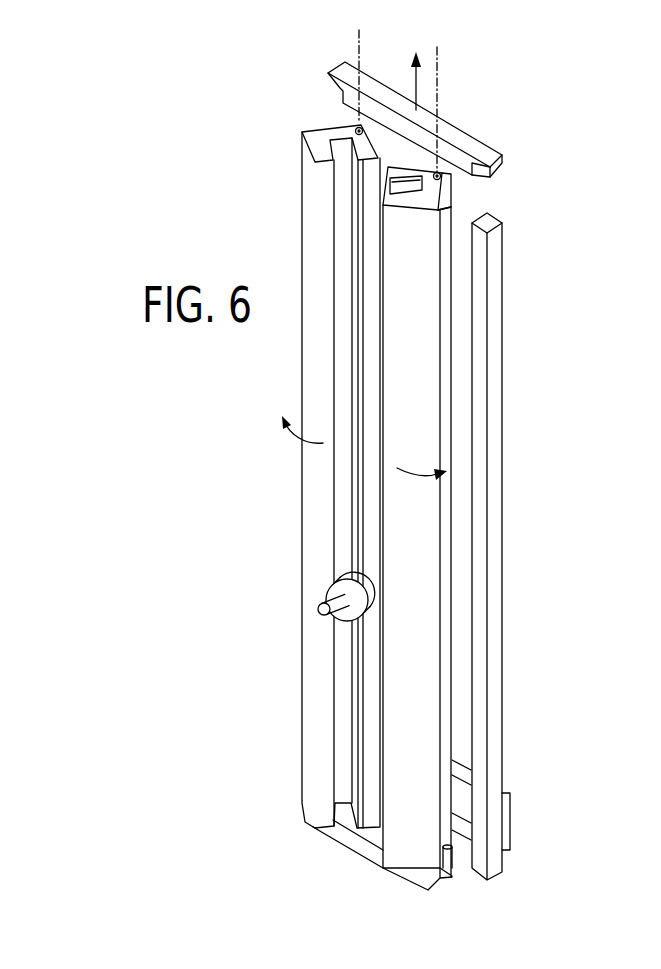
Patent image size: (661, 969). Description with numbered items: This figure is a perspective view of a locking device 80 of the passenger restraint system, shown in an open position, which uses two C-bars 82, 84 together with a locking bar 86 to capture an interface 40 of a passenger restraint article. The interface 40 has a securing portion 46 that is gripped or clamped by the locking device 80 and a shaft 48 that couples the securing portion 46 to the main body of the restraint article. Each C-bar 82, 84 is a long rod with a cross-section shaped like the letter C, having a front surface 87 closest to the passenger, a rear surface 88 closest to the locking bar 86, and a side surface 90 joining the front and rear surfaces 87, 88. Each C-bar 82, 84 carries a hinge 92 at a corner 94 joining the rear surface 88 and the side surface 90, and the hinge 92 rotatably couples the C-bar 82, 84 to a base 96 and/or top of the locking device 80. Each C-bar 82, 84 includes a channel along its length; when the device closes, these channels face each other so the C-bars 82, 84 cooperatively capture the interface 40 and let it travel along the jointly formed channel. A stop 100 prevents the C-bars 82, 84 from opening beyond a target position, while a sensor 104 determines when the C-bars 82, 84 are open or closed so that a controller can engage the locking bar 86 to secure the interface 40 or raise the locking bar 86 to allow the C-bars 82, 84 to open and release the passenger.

The interface 40 is at (332, 572).
The securing portion 46 is at (368, 588).
The shaft 48 is at (326, 586).
The locking device 80 is at (457, 68).
The C-bar 82 is at (318, 128).
The C-bar 84 is at (430, 210).
The locking bar 86 is at (450, 120).
The front surface 87 is at (422, 278).
The rear surface 88 is at (408, 165).
The side surface 90 is at (447, 350).
The hinge 92 is at (442, 168).
The corner 94 is at (452, 190).
The base 96 is at (352, 842).
The stop 100 is at (449, 868).
The sensor 104 is at (460, 841).